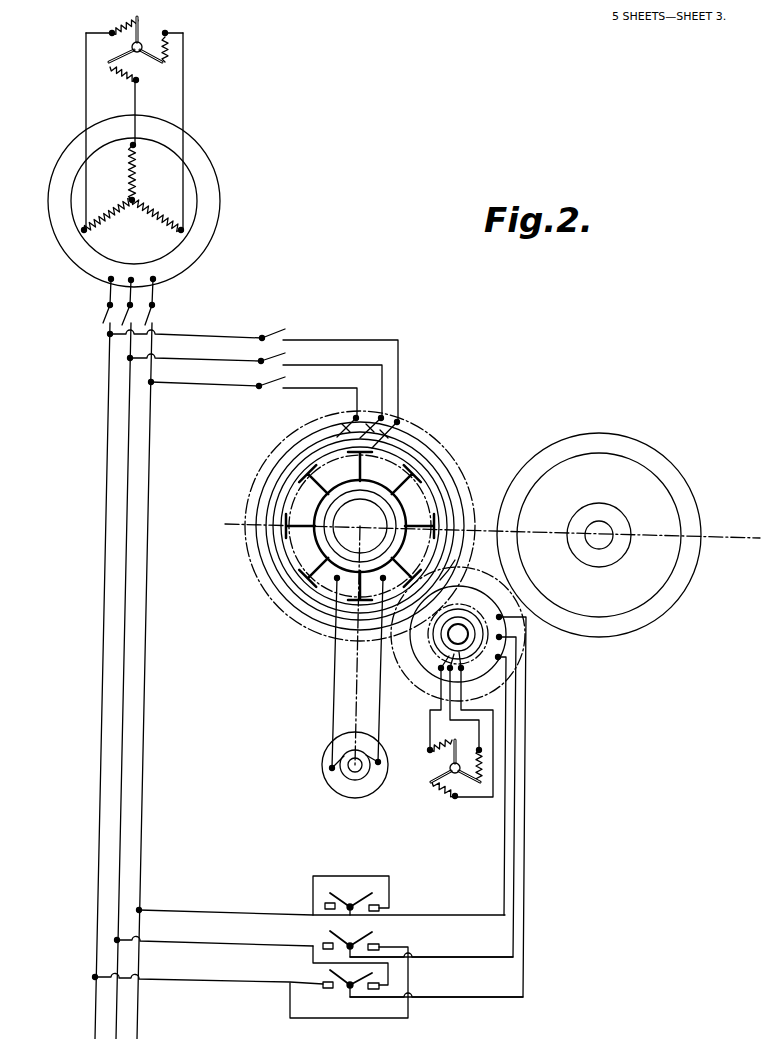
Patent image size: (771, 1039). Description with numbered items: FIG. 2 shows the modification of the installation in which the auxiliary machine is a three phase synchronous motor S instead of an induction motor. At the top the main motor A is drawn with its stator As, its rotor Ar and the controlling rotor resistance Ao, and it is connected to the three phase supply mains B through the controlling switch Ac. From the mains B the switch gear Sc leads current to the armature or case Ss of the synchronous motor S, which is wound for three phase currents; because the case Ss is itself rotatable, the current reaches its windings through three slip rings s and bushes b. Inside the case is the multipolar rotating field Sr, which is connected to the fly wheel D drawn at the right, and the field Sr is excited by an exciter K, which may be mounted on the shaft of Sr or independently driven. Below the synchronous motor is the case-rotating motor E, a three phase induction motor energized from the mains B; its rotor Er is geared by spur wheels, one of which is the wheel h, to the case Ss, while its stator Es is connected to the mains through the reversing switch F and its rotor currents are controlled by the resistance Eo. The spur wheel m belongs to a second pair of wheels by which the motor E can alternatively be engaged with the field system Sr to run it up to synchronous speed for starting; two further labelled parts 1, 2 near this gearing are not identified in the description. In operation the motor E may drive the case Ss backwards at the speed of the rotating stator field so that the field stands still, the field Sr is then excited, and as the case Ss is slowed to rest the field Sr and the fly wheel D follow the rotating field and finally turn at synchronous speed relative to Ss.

The controlling rotor resistance Ao is at (139, 44).
The main motor A is at (134, 160).
The rotor Ar is at (133, 188).
The stator As is at (208, 216).
The controlling switch Ac is at (156, 318).
The supply mains B is at (100, 566).
The switch gear Sc is at (270, 335).
The synchronous motor S is at (492, 588).
The armature or case Ss is at (455, 490).
The slip rings s is at (282, 482).
The multipolar rotating field Sr is at (353, 526).
The spur wheel m is at (419, 525).
The bushes b is at (348, 426).
The spur wheel h is at (458, 570).
The exciter pole 1 is at (458, 634).
The exciter pole 2 is at (478, 618).
The exciter K is at (374, 786).
The fly wheel D is at (632, 449).
The motor E is at (450, 791).
The rotor Er is at (446, 637).
The stator Es is at (461, 724).
The resistance Eo is at (452, 773).
The reversing switch F is at (342, 978).